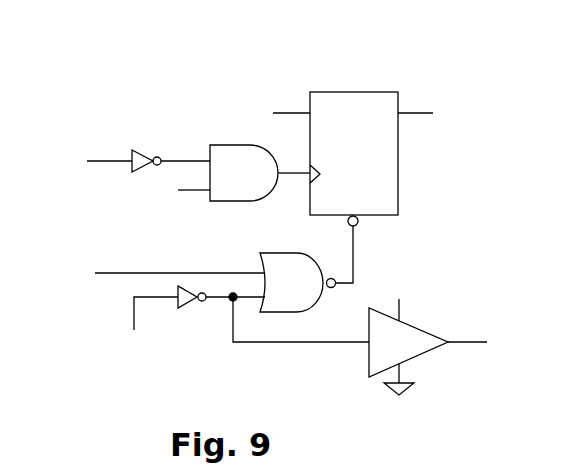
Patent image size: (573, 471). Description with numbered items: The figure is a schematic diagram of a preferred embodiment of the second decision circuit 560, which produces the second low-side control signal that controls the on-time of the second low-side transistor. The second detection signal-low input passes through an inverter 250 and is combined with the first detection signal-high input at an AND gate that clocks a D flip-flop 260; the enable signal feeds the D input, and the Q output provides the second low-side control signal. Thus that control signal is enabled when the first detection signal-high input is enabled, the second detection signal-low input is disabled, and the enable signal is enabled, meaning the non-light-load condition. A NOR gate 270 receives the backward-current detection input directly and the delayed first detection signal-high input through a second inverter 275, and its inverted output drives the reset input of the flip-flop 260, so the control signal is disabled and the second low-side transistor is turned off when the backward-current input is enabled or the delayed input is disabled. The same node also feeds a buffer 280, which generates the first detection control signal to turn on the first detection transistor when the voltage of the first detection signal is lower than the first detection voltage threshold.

The signal generation circuit 560 is at (125, 33).
The inverter 250 is at (145, 154).
The D flip-flop 260 is at (373, 167).
The NOR gate 270 is at (284, 253).
The inverter 275 is at (194, 306).
The buffer 280 is at (423, 331).